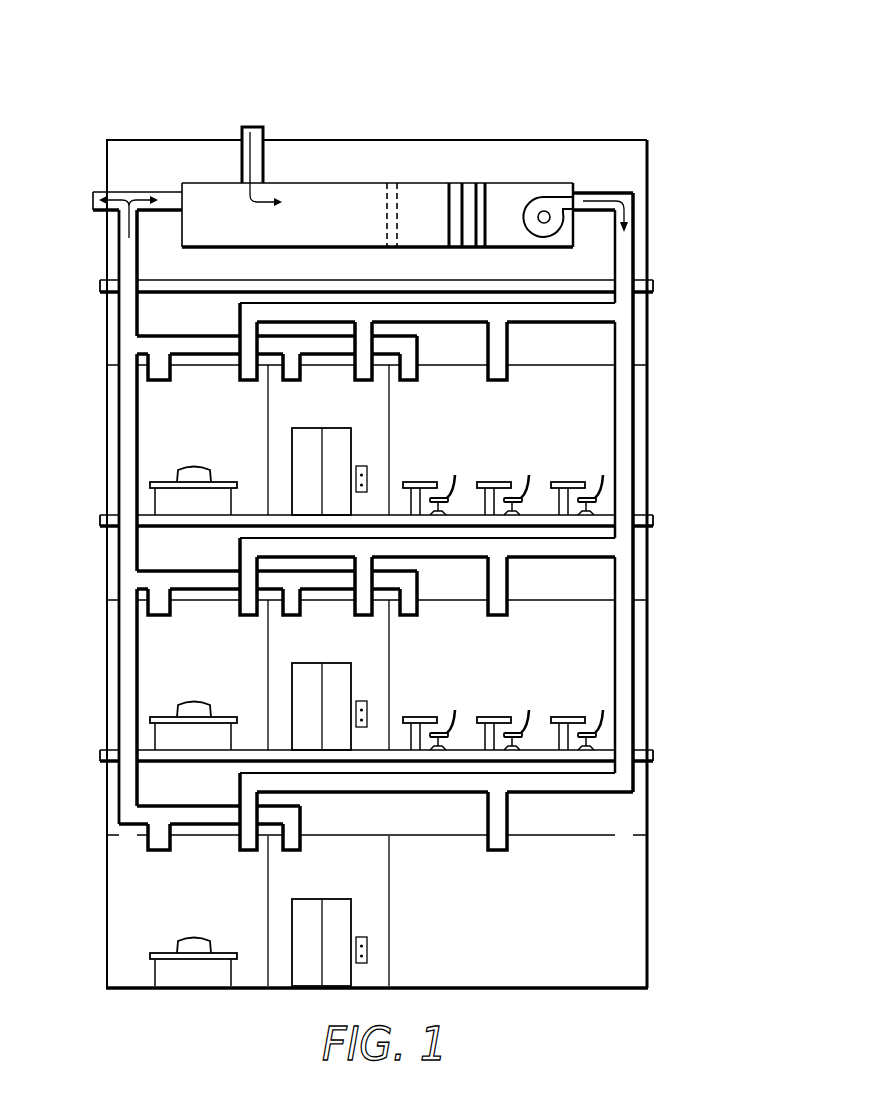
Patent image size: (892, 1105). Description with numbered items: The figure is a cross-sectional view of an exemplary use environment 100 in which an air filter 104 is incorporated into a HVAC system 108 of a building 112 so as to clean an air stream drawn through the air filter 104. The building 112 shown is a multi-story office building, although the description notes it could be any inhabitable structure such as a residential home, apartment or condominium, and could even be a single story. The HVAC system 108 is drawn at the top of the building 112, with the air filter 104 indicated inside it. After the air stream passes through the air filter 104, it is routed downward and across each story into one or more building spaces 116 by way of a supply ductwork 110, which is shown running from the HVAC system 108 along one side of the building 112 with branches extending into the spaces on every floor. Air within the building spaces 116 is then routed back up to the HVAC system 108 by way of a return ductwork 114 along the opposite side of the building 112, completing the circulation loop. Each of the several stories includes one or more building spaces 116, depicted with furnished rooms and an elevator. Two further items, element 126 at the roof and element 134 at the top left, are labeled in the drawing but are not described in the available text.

The use environment 100 is at (151, 58).
The air filter 104 is at (394, 183).
The HVAC system 108 is at (510, 183).
The supply ductwork 110 is at (623, 640).
The building 112 is at (650, 228).
The return ductwork 114 is at (127, 430).
The building spaces 116 is at (597, 418).
The exhaust vent 126 is at (257, 127).
The air intake 134 is at (93, 200).